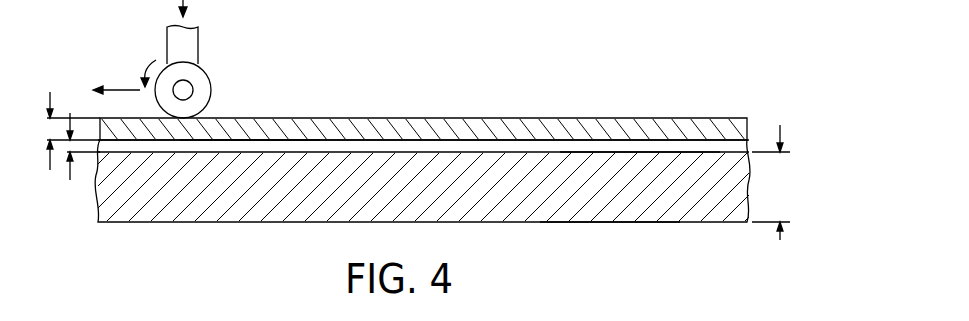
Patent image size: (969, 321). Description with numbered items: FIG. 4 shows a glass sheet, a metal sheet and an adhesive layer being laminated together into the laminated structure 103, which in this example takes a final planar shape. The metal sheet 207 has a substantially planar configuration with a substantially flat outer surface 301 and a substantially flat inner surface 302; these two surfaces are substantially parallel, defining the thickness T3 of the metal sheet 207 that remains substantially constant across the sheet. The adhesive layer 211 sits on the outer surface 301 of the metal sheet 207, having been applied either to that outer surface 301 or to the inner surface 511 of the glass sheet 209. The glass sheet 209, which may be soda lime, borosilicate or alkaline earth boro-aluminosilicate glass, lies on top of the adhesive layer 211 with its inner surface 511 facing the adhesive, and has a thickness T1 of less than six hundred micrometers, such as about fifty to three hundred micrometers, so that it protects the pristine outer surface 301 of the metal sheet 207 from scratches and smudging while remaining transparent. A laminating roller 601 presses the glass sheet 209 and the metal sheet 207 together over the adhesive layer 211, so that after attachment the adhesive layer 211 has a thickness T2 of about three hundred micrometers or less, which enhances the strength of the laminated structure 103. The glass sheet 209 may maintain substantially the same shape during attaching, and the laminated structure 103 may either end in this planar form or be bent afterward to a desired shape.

The laminated structure 103 is at (460, 166).
The glass sheet 209 is at (343, 128).
The adhesive layer 211 is at (395, 148).
The metal sheet 207 is at (453, 168).
The outer surface 301 is at (635, 152).
The inner surface 302 is at (605, 222).
The inner surface 511 is at (237, 140).
The laminating roller 601 is at (198, 50).
The thickness of the glass sheet T1 is at (50, 133).
The thickness of the adhesive layer T2 is at (79, 161).
The thickness of the metal sheet T3 is at (775, 182).